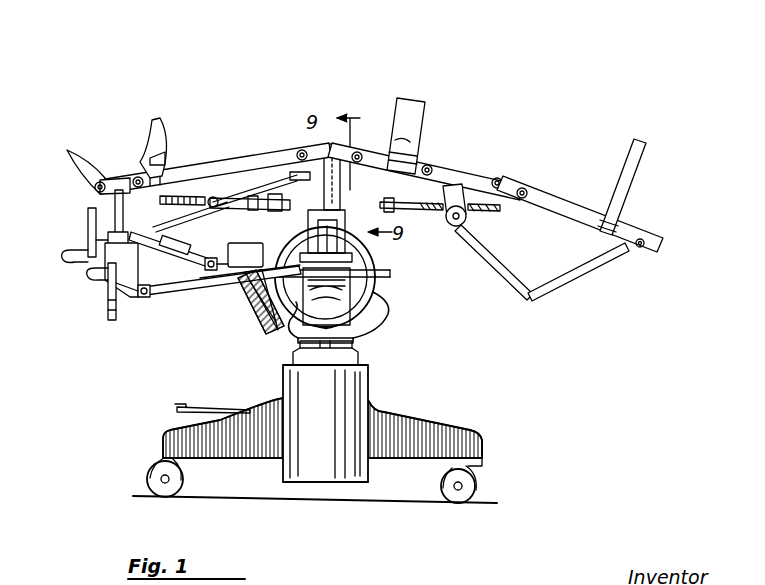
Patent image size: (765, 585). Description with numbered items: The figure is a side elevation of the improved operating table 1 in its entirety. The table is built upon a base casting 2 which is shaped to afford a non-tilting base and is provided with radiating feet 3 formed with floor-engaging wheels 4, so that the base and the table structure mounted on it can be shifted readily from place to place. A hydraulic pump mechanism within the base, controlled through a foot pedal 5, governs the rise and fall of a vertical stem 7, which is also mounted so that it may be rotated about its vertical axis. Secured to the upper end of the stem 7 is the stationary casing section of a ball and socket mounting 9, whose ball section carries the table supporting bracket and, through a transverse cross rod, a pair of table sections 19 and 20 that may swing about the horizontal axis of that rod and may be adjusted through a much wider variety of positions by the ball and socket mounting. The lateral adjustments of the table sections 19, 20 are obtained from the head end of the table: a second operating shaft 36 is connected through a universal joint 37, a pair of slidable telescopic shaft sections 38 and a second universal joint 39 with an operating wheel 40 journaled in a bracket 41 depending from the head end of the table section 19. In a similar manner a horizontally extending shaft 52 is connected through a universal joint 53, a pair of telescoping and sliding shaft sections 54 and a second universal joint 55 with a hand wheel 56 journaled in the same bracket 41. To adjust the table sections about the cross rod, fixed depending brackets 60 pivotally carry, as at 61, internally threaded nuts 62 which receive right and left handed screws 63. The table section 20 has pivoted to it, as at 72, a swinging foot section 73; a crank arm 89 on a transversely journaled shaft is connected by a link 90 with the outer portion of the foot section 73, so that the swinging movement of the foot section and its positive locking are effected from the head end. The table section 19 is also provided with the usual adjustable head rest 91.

The operating table 1 is at (437, 428).
The base casting 2 is at (394, 413).
The radiating feet 3 is at (474, 431).
The floor-engaging wheels 4 is at (473, 489).
The foot pedal 5 is at (181, 406).
The vertical stem 7 is at (330, 348).
The ball and socket mounting 9 is at (386, 302).
The table section 19 is at (237, 165).
The table section 20 is at (458, 172).
The second operating shaft 36 is at (262, 318).
The universal joint 37 is at (250, 290).
The telescopic shaft sections 38 is at (192, 291).
The second universal joint 39 is at (144, 299).
The operating wheel 40 is at (109, 316).
The bracket 41 is at (108, 284).
The horizontally extending shaft 52 is at (230, 260).
The universal joint 53 is at (206, 262).
The telescoping shaft sections 54 is at (165, 253).
The second universal joint 55 is at (133, 240).
The hand wheel 56 is at (88, 216).
The depending brackets 60 is at (192, 196).
The pivot 61 is at (214, 197).
The internally threaded nuts 62 is at (216, 201).
The right and left handed screws 63 is at (428, 212).
The pivot 72 is at (454, 228).
The swinging foot section 73 is at (570, 202).
The crank arm 89 is at (503, 270).
The link 90 is at (586, 276).
The adjustable head rest 91 is at (78, 163).